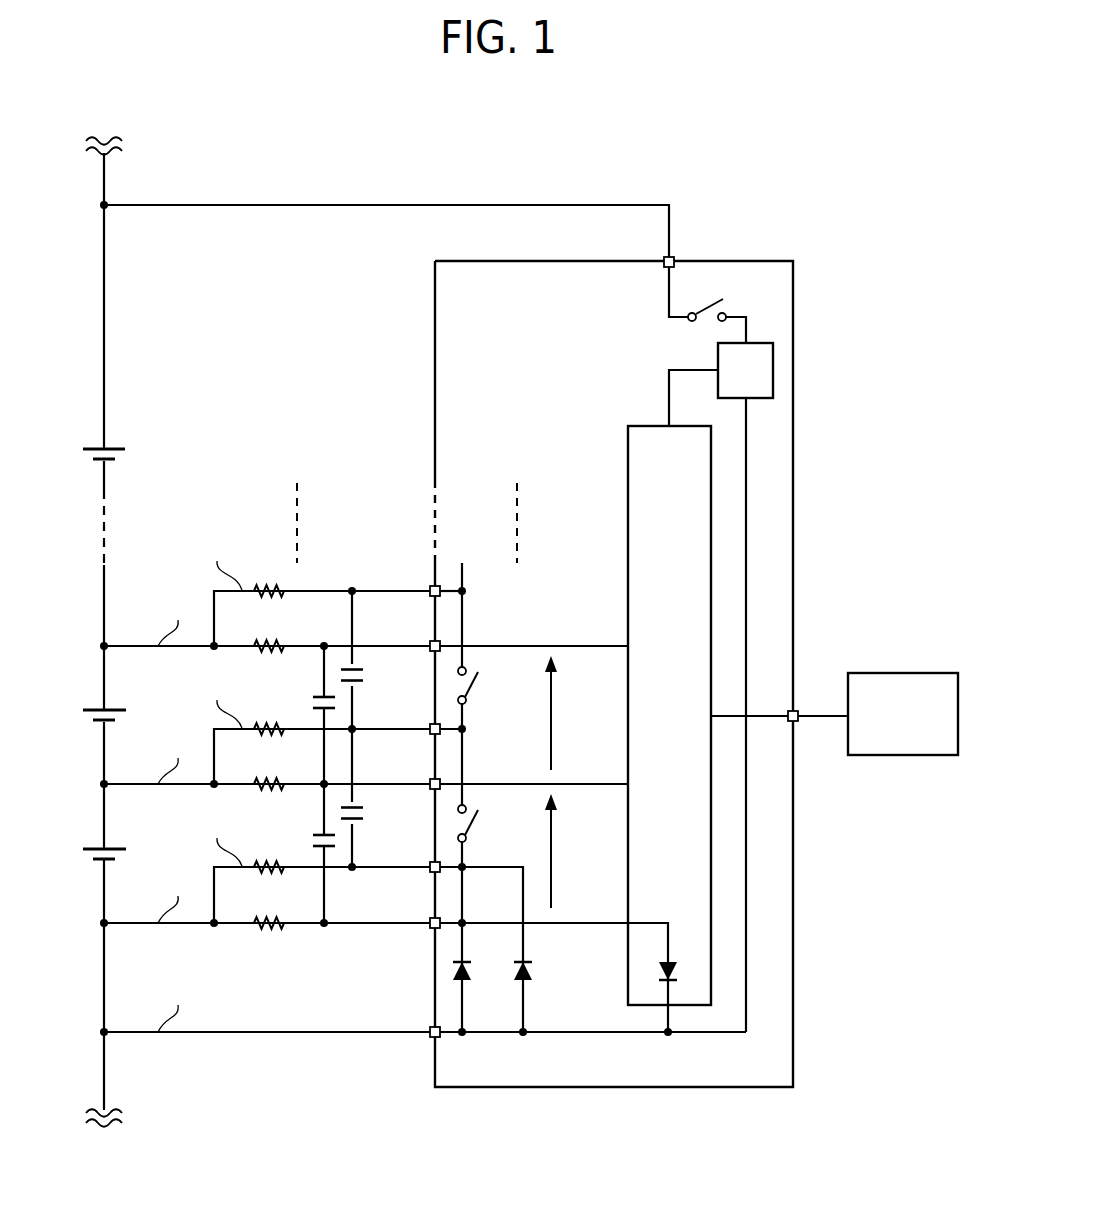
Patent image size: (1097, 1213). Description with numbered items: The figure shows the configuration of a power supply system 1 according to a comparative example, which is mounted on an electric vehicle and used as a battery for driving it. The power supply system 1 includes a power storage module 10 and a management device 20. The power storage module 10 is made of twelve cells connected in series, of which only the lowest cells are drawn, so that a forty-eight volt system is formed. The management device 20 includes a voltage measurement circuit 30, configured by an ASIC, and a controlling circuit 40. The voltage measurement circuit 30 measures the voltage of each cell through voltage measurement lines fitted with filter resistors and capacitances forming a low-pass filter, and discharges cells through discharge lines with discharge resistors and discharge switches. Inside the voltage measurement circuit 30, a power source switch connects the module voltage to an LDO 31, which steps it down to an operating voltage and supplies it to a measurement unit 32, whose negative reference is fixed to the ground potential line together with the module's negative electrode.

The power supply system 1 is at (510, 1168).
The power storage module 10 is at (73, 403).
The management device 20 is at (578, 177).
The voltage measurement circuit 30 is at (762, 261).
The low drop out (LDO) 31 is at (758, 342).
The measurement unit 32 is at (678, 425).
The controlling circuit 40 is at (926, 672).